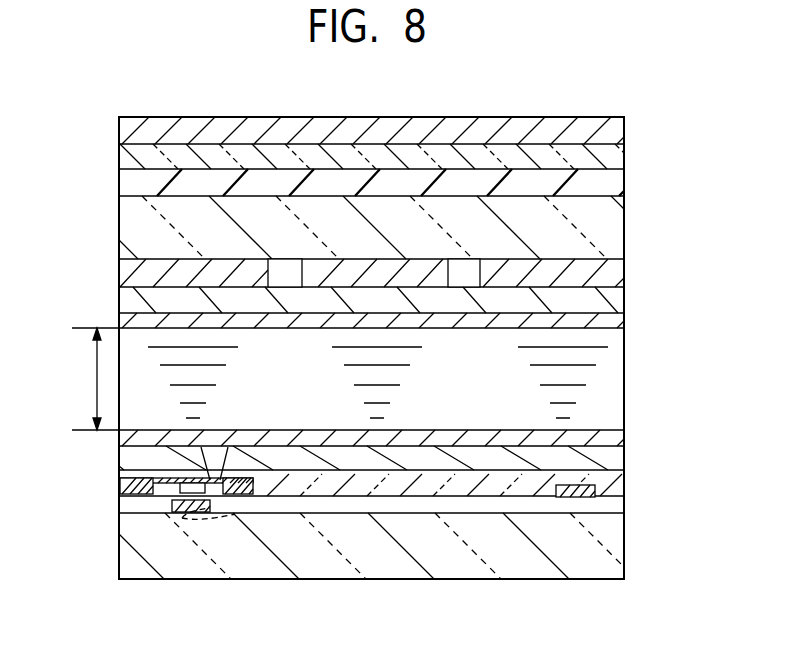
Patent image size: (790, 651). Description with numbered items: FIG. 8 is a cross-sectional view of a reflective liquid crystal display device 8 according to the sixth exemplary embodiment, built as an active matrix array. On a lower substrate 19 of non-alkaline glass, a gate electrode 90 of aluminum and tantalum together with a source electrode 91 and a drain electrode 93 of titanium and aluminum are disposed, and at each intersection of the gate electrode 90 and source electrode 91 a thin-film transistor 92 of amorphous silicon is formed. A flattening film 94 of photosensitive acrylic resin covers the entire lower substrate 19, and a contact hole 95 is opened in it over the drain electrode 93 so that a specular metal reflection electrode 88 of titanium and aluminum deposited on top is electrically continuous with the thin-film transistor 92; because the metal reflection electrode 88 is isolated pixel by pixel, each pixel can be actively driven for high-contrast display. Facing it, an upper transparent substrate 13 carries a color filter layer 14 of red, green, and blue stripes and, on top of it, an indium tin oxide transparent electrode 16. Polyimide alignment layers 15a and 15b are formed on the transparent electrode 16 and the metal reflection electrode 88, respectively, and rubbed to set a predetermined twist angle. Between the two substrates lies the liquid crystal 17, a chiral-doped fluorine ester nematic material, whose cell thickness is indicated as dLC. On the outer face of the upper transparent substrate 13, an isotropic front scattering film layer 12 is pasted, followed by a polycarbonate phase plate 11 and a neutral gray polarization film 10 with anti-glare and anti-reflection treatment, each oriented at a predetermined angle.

The reflective liquid crystal display device 8 is at (702, 208).
The polarization film 10 is at (624, 132).
The phase plate 11 is at (624, 160).
The scattering film layer 12 is at (624, 185).
The upper transparent substrate 13 is at (619, 225).
The color filter layer 14 is at (624, 266).
The transparent electrode 16 is at (624, 292).
The alignment layer 15a is at (624, 322).
The liquid crystal 17 is at (619, 380).
The alignment layer 15b is at (624, 432).
The metal reflection electrode 88 is at (624, 460).
The flattening film 94 is at (624, 487).
The source electrode 91 is at (574, 497).
The drain electrode 93 is at (240, 488).
The contact hole 95 is at (207, 472).
The gate electrode 90 is at (172, 500).
The thin-film transistor 92 is at (182, 518).
The lower substrate 19 is at (624, 542).
The liquid crystal layer thickness dLC is at (92, 378).